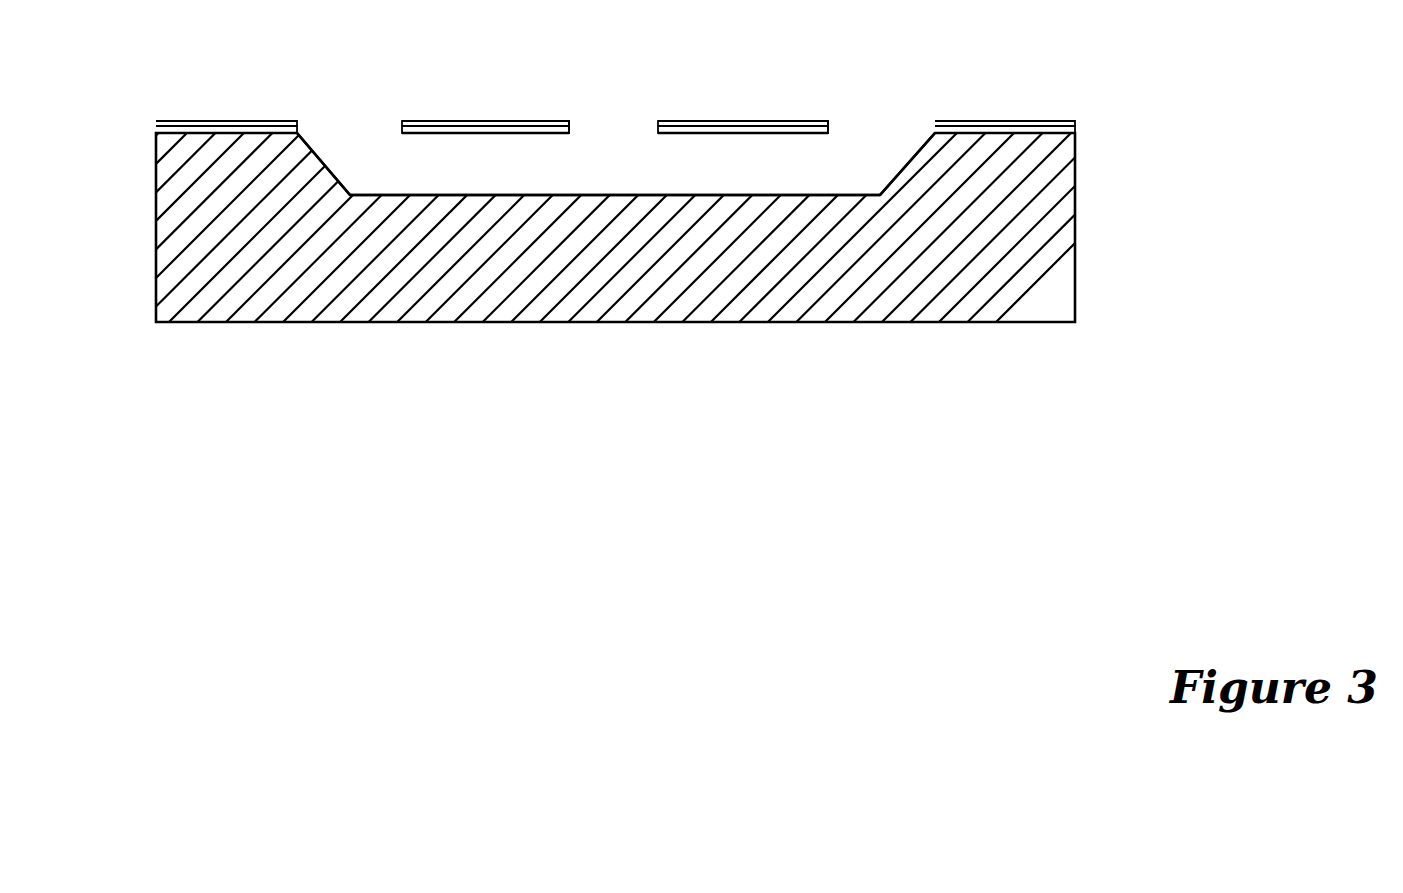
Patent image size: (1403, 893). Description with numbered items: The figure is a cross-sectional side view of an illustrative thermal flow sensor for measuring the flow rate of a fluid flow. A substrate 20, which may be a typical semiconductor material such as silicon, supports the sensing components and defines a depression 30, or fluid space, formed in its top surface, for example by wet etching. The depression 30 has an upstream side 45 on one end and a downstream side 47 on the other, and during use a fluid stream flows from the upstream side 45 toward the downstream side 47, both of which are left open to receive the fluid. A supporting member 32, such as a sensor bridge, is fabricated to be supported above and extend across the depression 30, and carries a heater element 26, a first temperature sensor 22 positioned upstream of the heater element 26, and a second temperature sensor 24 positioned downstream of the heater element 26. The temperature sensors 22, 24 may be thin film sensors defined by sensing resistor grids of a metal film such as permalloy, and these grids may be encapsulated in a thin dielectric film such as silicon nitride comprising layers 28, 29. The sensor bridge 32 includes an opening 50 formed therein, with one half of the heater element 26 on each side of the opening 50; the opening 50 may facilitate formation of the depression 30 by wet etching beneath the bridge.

The substrate 20 is at (563, 307).
The first temperature sensor 22 is at (403, 115).
The second temperature sensor 24 is at (825, 115).
The heater element 26 is at (687, 115).
The dielectric layer 28 is at (156, 124).
The dielectric layer 29 is at (156, 131).
The depression 30 is at (490, 185).
The supporting member 32 is at (798, 93).
The upstream side 45 is at (307, 103).
The downstream side 47 is at (915, 110).
The opening 50 is at (638, 138).